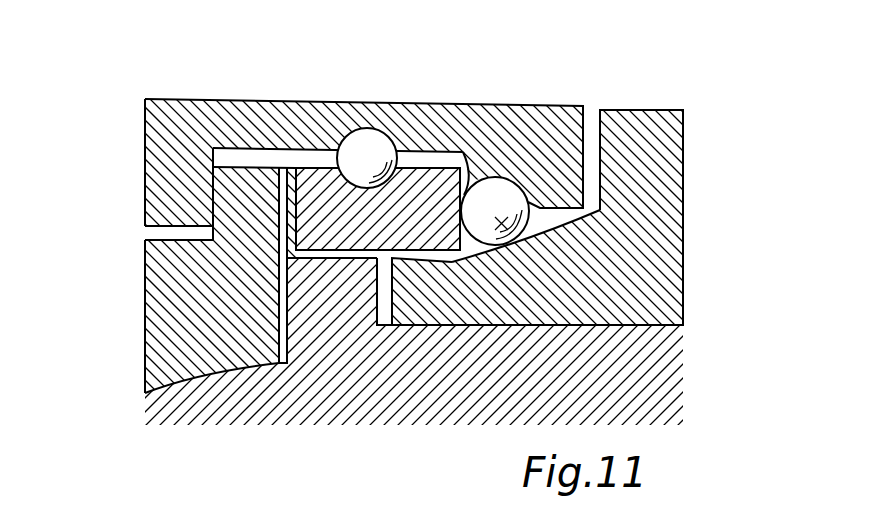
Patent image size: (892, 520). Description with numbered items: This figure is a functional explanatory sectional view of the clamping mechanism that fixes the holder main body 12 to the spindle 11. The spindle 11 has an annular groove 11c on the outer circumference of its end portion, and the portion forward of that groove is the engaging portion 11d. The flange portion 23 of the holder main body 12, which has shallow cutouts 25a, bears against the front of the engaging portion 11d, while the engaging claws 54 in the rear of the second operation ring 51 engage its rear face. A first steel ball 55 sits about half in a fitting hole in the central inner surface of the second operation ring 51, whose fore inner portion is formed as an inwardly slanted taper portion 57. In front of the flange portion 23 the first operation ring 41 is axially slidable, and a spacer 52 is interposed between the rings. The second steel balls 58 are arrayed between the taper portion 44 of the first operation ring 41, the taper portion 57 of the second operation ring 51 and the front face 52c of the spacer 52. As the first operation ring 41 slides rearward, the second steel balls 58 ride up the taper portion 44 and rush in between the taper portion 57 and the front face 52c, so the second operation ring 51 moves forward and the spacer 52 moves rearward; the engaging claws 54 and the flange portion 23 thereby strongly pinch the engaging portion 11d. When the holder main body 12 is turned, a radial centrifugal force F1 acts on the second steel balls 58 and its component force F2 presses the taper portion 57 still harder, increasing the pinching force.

The spindle 11 is at (140, 378).
The annular groove 11c is at (162, 220).
The engaging portion 11d is at (237, 190).
The holder main body 12 is at (228, 413).
The flange portion 23 is at (310, 320).
The shallow cutout 25a is at (297, 254).
The first operation ring 41 is at (643, 123).
The taper portion 44 is at (532, 218).
The second operation ring 51 is at (176, 110).
The spacer 52 is at (313, 172).
The front face 52c is at (456, 168).
The engaging claw 54 is at (162, 157).
The first steel ball 55 is at (366, 150).
The taper portion 57 is at (508, 177).
The second steel ball 58 is at (525, 243).
The radial centrifugal force F1 is at (503, 172).
The component force F2 is at (550, 148).